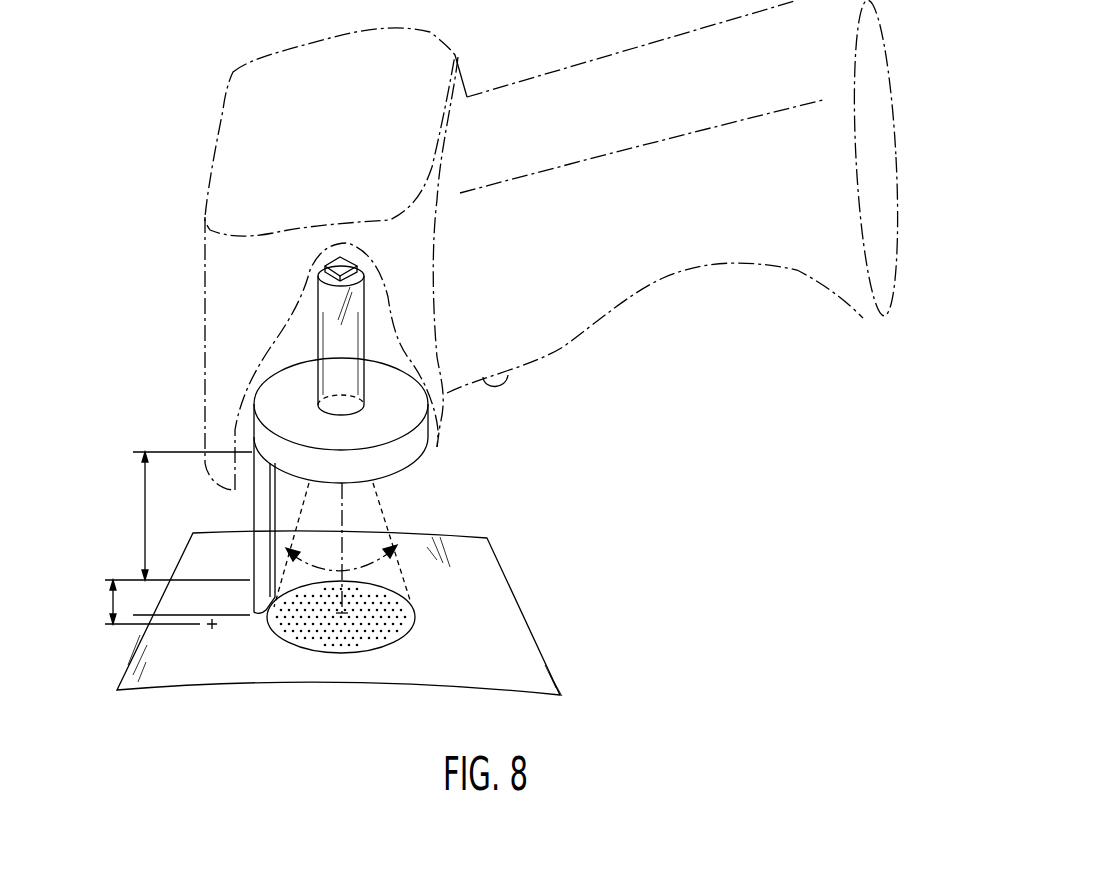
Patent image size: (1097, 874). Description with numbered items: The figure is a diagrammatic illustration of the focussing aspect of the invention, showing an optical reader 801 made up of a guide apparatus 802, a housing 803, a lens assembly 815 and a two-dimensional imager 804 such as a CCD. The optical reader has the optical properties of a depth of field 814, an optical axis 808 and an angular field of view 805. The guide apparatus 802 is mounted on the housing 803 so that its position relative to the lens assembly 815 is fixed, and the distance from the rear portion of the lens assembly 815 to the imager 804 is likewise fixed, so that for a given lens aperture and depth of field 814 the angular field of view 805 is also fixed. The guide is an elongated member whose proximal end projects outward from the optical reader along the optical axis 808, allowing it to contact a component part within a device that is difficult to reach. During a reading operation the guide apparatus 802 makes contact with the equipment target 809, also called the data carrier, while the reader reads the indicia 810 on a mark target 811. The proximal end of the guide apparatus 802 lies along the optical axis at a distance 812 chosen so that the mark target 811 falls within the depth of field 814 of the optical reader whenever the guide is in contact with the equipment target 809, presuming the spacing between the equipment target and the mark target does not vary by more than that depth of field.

The optical reader 801 is at (533, 59).
The guide apparatus 802 is at (258, 614).
The housing 803 is at (297, 47).
The 2D imager 804 is at (333, 255).
The angular field of view 805 is at (377, 567).
The optical axis 808 is at (343, 508).
The equipment target 809 is at (467, 547).
The indicia 810 is at (400, 607).
The mark target 811 is at (398, 640).
The distance 812 is at (143, 522).
The depth of field 814 is at (112, 603).
The lens assembly 815 is at (317, 292).